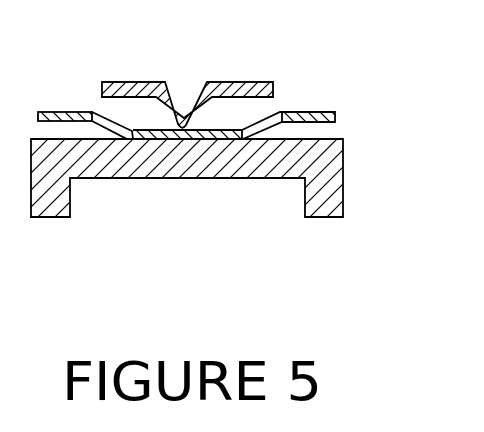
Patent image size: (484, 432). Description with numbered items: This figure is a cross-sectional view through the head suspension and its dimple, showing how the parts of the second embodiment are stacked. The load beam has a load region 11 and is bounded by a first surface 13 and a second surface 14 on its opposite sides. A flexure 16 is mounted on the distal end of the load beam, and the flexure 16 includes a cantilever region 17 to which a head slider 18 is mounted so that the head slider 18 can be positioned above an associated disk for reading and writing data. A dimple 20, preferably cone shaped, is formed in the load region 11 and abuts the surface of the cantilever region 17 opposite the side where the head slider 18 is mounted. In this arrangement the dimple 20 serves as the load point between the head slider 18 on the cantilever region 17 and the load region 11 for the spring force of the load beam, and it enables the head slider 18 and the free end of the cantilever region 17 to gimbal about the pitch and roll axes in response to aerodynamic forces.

The load region 11 is at (242, 92).
The first surface 13 is at (113, 86).
The second surface 14 is at (105, 106).
The flexure 16 is at (307, 115).
The cantilever region 17 is at (200, 135).
The head slider 18 is at (328, 170).
The dimple 20 is at (184, 120).